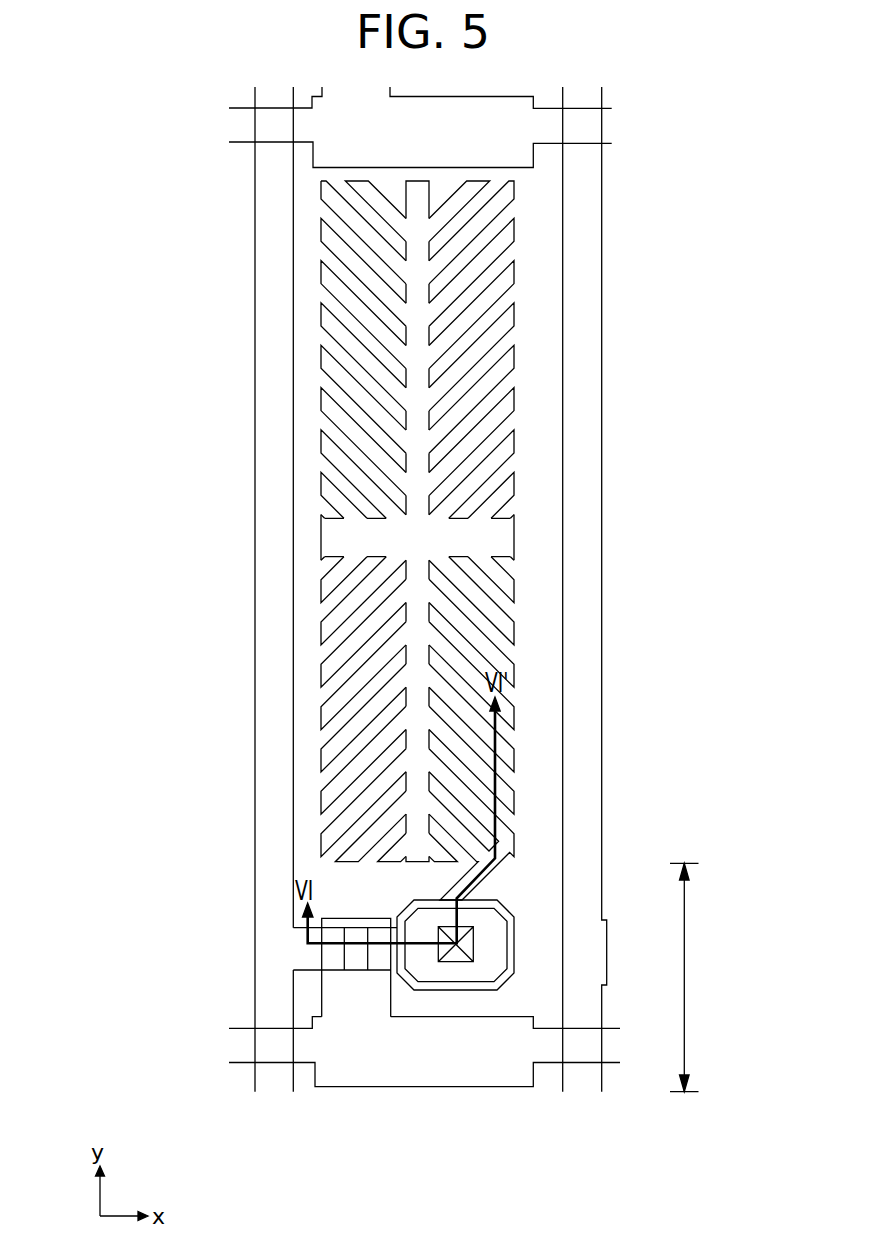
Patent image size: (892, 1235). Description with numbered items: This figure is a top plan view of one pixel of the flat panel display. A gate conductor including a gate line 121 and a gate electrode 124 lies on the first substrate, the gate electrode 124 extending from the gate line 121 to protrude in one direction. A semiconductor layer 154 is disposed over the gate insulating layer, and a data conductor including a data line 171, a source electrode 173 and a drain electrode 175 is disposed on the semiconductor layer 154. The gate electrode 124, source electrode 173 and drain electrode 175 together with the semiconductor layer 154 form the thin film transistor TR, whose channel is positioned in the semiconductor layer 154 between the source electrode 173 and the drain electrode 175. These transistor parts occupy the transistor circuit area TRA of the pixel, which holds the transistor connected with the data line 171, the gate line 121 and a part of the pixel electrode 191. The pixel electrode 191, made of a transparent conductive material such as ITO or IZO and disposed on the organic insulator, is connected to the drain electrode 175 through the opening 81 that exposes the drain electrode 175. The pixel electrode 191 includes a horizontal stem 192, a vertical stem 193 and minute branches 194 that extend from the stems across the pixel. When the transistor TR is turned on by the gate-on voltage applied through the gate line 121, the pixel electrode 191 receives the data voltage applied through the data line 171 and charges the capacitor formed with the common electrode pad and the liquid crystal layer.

The gate line 121 is at (242, 1064).
The gate electrode 124 is at (321, 952).
The semiconductor layer 154 is at (360, 970).
The data line 171 is at (255, 424).
The source electrode 173 is at (332, 970).
The drain electrode 175 is at (473, 982).
The opening 81 is at (473, 944).
The pixel electrode 191 is at (551, 526).
The horizontal stem 192 is at (497, 538).
The vertical stem 193 is at (420, 190).
The minute branch 194 is at (476, 265).
The transistor TR is at (303, 982).
The transistor circuit area TRA is at (700, 977).